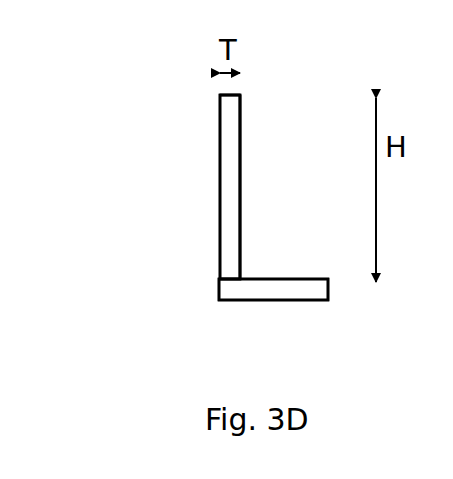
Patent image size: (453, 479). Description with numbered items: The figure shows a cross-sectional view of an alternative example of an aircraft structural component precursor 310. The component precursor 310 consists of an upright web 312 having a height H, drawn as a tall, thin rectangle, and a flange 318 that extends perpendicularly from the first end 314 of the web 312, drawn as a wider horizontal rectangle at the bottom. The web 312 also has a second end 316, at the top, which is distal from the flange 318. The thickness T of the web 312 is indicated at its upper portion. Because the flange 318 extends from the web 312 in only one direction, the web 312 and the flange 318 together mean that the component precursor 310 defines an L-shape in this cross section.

The component precursor 310 is at (208, 127).
The web 312 is at (219, 223).
The first end 314 is at (239, 278).
The second end 316 is at (234, 94).
The flange 318 is at (218, 288).